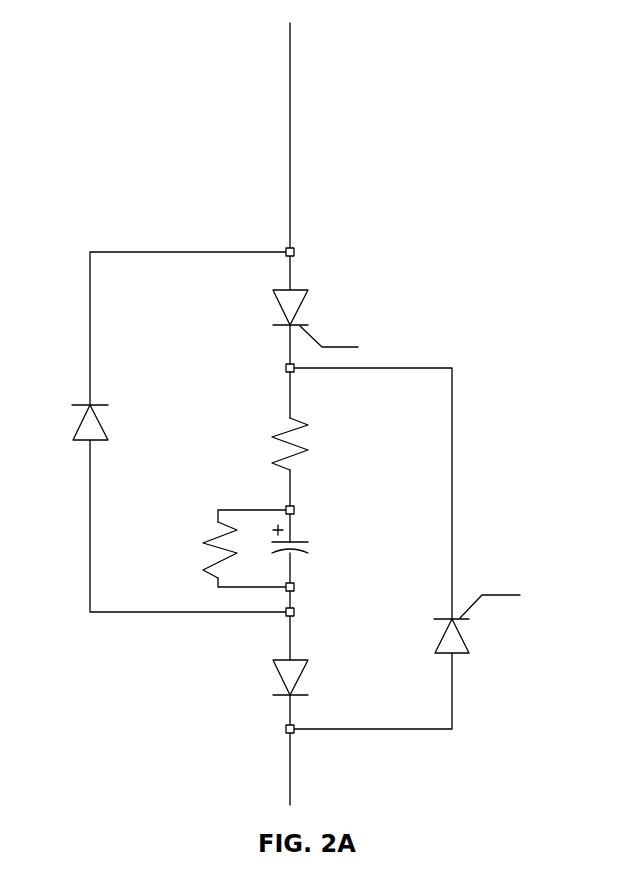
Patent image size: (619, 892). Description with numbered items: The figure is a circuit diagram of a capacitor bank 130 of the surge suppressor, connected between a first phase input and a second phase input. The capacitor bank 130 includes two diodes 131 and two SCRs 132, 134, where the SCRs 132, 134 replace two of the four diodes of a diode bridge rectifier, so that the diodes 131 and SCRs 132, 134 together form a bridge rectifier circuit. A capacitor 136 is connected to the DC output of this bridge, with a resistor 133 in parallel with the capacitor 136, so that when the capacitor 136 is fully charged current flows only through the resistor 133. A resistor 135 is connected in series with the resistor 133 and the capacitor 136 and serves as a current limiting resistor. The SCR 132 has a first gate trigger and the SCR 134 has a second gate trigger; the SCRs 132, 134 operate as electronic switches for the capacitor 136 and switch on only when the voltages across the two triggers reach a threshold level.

The capacitor bank 130 is at (153, 88).
The diode 131 is at (100, 425).
The SCR 132 is at (305, 290).
The resistor 133 is at (205, 543).
The SCR 134 is at (455, 655).
The resistor 135 is at (297, 422).
The capacitor 136 is at (310, 541).